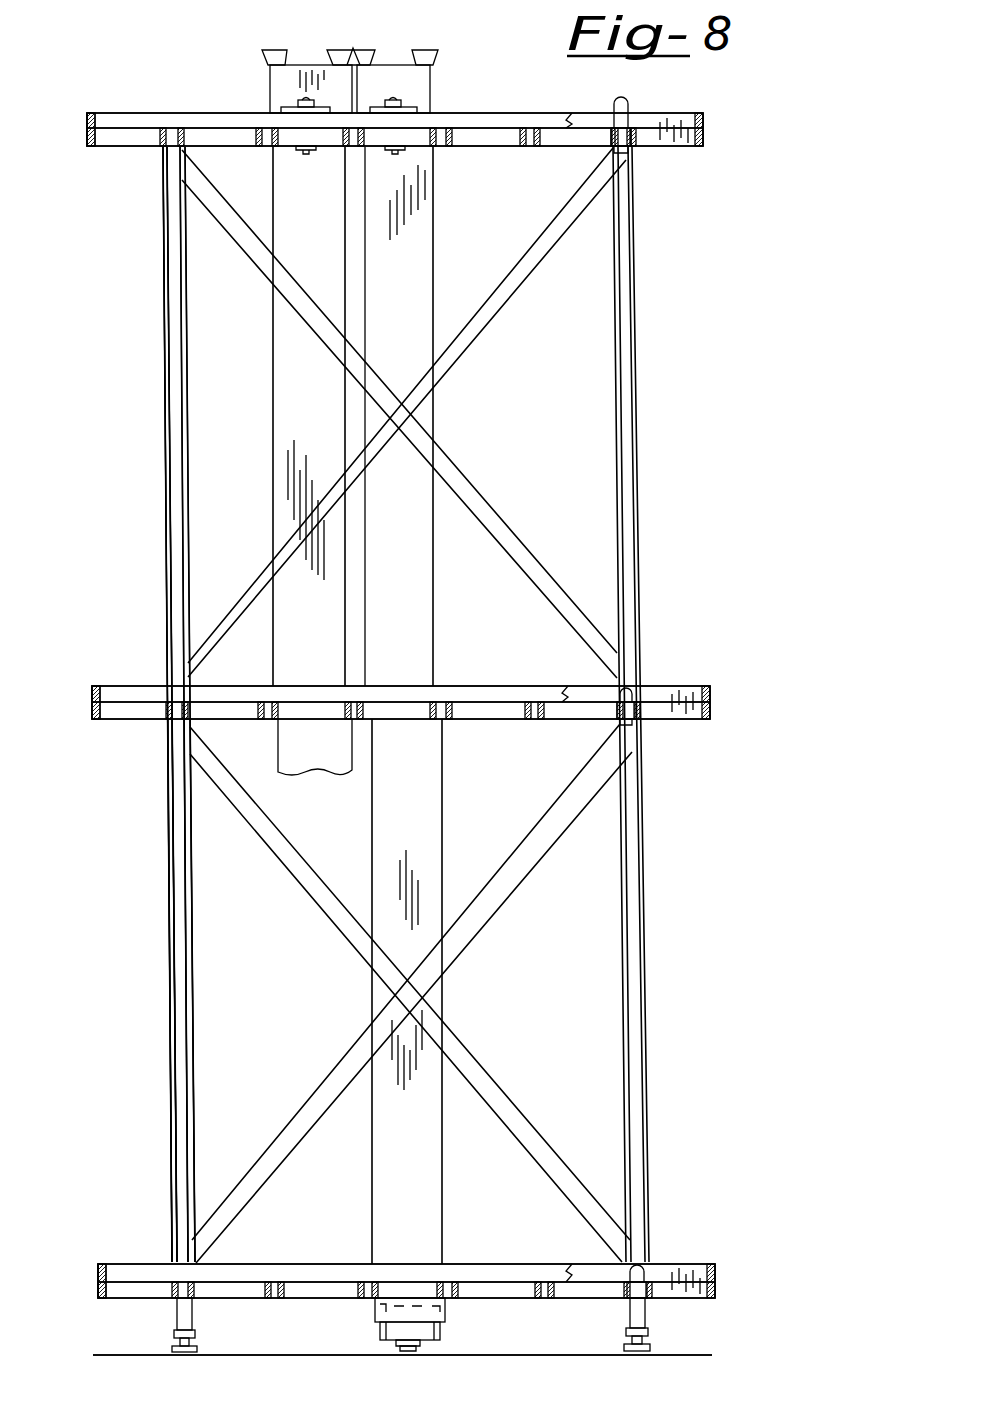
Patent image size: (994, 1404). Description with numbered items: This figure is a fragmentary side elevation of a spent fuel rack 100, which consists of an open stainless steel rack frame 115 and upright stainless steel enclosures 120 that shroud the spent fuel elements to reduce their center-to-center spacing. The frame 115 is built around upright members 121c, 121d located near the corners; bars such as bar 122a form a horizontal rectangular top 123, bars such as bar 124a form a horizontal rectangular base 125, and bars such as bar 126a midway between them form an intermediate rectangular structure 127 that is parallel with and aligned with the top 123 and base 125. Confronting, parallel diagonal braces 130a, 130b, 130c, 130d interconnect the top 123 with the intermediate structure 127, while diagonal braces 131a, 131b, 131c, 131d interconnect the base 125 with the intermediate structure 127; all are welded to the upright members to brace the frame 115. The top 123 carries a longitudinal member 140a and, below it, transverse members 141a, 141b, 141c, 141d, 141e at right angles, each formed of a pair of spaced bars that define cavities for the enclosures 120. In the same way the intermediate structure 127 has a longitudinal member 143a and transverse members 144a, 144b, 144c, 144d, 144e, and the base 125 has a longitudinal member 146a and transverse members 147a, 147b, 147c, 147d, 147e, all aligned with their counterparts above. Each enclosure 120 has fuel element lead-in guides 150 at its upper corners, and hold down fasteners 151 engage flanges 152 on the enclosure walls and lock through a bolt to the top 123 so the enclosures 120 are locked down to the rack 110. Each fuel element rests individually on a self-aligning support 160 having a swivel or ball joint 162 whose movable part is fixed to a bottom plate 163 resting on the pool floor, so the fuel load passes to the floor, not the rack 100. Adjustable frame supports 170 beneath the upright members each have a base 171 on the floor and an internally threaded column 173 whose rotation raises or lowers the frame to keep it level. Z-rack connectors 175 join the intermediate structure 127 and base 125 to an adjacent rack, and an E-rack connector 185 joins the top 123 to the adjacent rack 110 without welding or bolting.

The rack 100 is at (122, 386).
The rack 110 is at (708, 120).
The open rack frame 115 is at (160, 325).
The upright enclosure 120 is at (350, 250).
The upright member 121c is at (632, 515).
The upright member 121d is at (170, 520).
The bar 122a is at (88, 126).
The top 123 is at (84, 112).
The bar 124a is at (98, 1286).
The base 125 is at (96, 1298).
The bar 126a is at (92, 706).
The intermediate rectangular structure 127 is at (90, 720).
The diagonal brace 130a is at (164, 432).
The diagonal brace 130b is at (185, 438).
The diagonal brace 130c is at (170, 972).
The diagonal brace 130d is at (192, 976).
The diagonal brace 131a is at (290, 274).
The diagonal brace 131b is at (505, 290).
The diagonal brace 131c is at (370, 1022).
The diagonal brace 131d is at (448, 1028).
The longitudinal member 140a is at (112, 118).
The transverse member 141a is at (162, 136).
The transverse member 141b is at (260, 130).
The transverse member 141c is at (342, 137).
The transverse member 141d is at (445, 130).
The transverse member 141e is at (525, 134).
The longitudinal member 143a is at (95, 688).
The transverse member 144a is at (165, 688).
The transverse member 144b is at (260, 700).
The transverse member 144c is at (350, 710).
The transverse member 144d is at (447, 700).
The transverse member 144e is at (532, 700).
The longitudinal member 146a is at (118, 1270).
The transverse member 147a is at (176, 1266).
The transverse member 147b is at (268, 1280).
The transverse member 147c is at (356, 1280).
The transverse member 147d is at (458, 1280).
The transverse member 147e is at (540, 1280).
The fuel element lead-in guide 150 is at (420, 50).
The hold down fastener 151 is at (395, 100).
The flange 152 is at (300, 102).
The self-aligning support 160 is at (372, 1326).
The swivel or ball joint 162 is at (400, 1350).
The bottom plate 163 is at (425, 1352).
The adjustable frame support 170 is at (172, 1346).
The base 171 is at (196, 1352).
The internally threaded column 173 is at (192, 1315).
The Z-rack connector 175 is at (640, 690).
The E-rack connector 185 is at (632, 104).